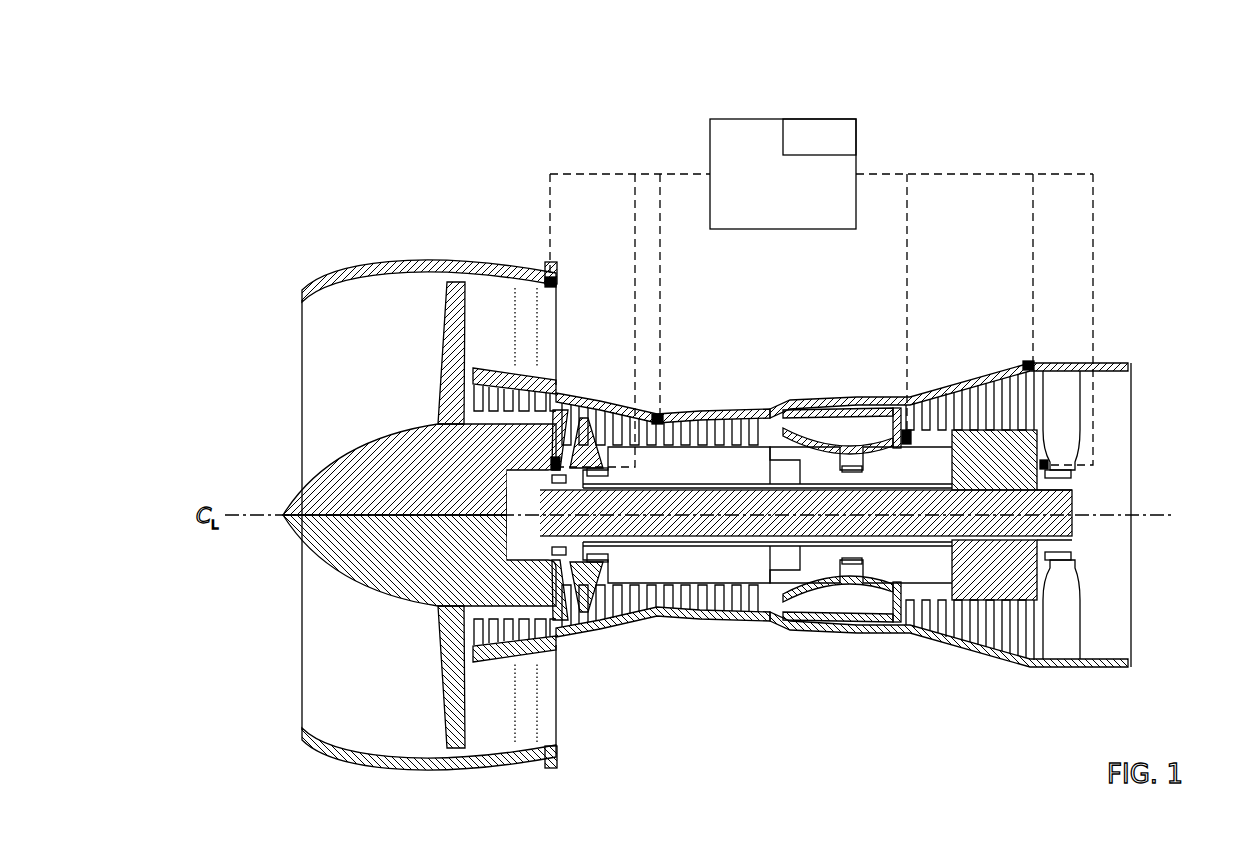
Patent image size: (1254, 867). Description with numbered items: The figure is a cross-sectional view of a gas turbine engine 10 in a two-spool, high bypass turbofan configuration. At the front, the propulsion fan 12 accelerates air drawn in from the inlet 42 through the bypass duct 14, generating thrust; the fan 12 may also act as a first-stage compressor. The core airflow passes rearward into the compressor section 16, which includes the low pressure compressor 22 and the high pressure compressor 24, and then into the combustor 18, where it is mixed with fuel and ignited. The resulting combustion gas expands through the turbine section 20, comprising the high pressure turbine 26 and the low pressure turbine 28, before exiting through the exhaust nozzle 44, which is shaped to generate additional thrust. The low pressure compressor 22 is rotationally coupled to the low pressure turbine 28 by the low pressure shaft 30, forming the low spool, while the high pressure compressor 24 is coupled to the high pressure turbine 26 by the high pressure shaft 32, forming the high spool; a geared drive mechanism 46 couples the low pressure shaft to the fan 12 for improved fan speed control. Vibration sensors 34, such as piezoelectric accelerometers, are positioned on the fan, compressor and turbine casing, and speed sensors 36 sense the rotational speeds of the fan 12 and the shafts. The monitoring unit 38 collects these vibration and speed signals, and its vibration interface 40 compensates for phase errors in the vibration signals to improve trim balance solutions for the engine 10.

The gas turbine engine 10 is at (290, 232).
The propulsion fan 12 is at (452, 366).
The bypass duct 14 is at (558, 322).
The compressor section 16 is at (477, 693).
The combustor 18 is at (836, 430).
The turbine section 20 is at (880, 713).
The low pressure compressor 22 is at (554, 633).
The high pressure compressor 24 is at (655, 622).
The high pressure turbine 26 is at (921, 633).
The low pressure turbine 28 is at (990, 652).
The low pressure shaft 30 is at (793, 523).
The high pressure shaft 32 is at (735, 465).
The vibration sensors 34 is at (557, 278).
The speed sensors 36 is at (559, 462).
The monitoring unit 38 is at (710, 146).
The vibration interface 40 is at (856, 140).
The inlet 42 is at (289, 346).
The exhaust nozzle 44 is at (1140, 430).
The geared drive mechanism 46 is at (512, 529).